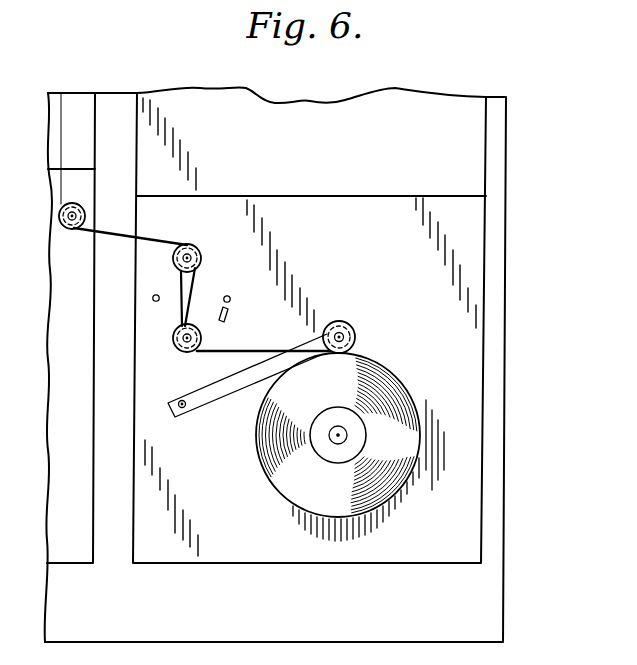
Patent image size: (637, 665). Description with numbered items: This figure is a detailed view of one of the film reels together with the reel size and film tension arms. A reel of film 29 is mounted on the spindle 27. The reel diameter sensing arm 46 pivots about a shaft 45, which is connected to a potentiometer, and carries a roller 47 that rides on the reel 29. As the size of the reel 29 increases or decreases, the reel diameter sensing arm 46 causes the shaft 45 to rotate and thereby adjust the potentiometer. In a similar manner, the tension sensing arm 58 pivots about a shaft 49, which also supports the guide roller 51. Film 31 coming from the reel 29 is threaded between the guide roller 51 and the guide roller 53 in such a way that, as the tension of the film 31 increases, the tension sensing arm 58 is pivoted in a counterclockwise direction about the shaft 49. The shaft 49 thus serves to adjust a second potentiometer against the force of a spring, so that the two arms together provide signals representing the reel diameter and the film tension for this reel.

The spindle 27 is at (333, 437).
The reel of film 29 is at (375, 380).
The film 31 is at (185, 289).
The shaft 45 is at (186, 407).
The reel diameter sensing arm 46 is at (243, 378).
The roller 47 is at (340, 321).
The shaft 49 is at (205, 322).
The guide roller 51 is at (190, 353).
The guide roller 53 is at (193, 245).
The tension sensing arm 58 is at (177, 297).